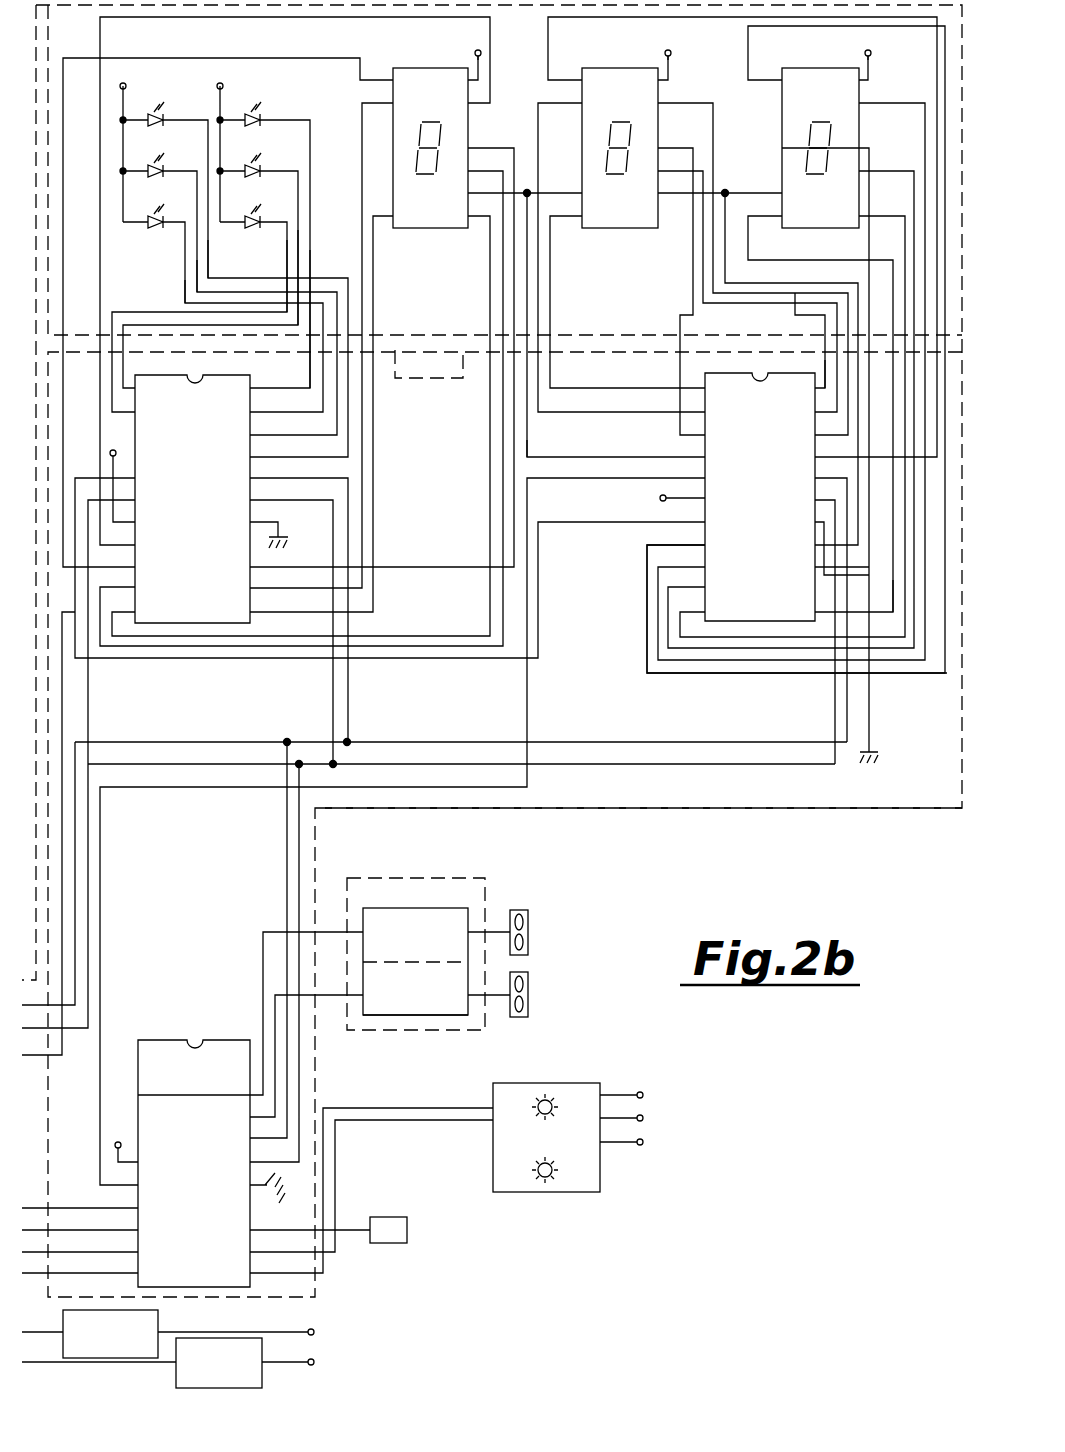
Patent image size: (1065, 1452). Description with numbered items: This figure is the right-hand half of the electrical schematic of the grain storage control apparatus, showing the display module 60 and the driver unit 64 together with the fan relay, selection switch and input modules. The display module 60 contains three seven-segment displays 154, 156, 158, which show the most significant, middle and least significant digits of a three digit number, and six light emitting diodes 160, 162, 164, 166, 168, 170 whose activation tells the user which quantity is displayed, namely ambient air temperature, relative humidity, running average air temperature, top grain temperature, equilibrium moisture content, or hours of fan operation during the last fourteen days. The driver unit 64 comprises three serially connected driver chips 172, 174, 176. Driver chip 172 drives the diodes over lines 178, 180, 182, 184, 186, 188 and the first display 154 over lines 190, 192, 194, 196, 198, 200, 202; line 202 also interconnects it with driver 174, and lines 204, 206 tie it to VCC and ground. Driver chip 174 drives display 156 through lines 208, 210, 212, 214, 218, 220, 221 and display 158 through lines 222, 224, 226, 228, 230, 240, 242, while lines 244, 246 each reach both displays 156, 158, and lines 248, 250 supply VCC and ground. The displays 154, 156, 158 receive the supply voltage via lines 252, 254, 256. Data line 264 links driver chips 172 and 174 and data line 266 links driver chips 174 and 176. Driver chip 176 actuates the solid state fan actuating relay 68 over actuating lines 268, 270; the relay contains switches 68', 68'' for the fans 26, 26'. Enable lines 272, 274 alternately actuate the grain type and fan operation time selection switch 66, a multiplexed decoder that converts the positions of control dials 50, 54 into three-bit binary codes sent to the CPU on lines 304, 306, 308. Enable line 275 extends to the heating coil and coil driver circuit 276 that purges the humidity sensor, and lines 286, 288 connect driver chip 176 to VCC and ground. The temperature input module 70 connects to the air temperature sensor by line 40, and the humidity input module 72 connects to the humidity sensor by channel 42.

The fan 26 is at (521, 928).
The fan 26' is at (526, 994).
The line 40 is at (292, 1332).
The channel 42 is at (295, 1362).
The control dial 50 is at (545, 1095).
The control dial 54 is at (548, 1180).
The display module 60 is at (450, 340).
The driver unit 64 is at (712, 810).
The grain type and desired time of daily fan operation selection switch 66 is at (578, 1083).
The solid state fan actuating relay 68 is at (429, 937).
The switch 68' is at (415, 929).
The switch 68'' is at (415, 1036).
The temperature input module 70 is at (160, 1322).
The humidity input module 72 is at (176, 1374).
The seven-segment display 154 is at (455, 64).
The seven-segment display 156 is at (630, 64).
The seven-segment display 158 is at (830, 64).
The light emitting diode 160 is at (148, 105).
The light emitting diode 162 is at (154, 165).
The light emitting diode 164 is at (154, 214).
The light emitting diode 166 is at (252, 105).
The light emitting diode 168 is at (248, 165).
The light emitting diode 170 is at (250, 214).
The driver chip 172 is at (200, 443).
The driver chip 174 is at (762, 443).
The driver chip 176 is at (182, 1040).
The line 178 is at (208, 240).
The line 180 is at (197, 260).
The line 182 is at (185, 280).
The line 184 is at (287, 118).
The line 186 is at (298, 187).
The line 188 is at (287, 252).
The line 190 is at (362, 97).
The line 192 is at (373, 255).
The line 194 is at (389, 331).
The line 196 is at (663, 333).
The line 198 is at (490, 268).
The line 200 is at (330, 18).
The line 202 is at (228, 58).
The line 204 is at (122, 524).
The line 206 is at (278, 520).
The line 208 is at (680, 428).
The line 210 is at (575, 400).
The line 212 is at (550, 256).
The line 214 is at (703, 270).
The line 218 is at (824, 370).
The line 220 is at (795, 305).
The line 221 is at (937, 92).
The line 222 is at (647, 552).
The line 224 is at (658, 582).
The line 226 is at (668, 610).
The line 228 is at (680, 630).
The line 230 is at (825, 650).
The line 240 is at (869, 660).
The line 242 is at (945, 132).
The line 244 is at (612, 455).
The line 246 is at (748, 280).
The line 248 is at (668, 492).
The line 250 is at (869, 740).
The line 252 is at (481, 58).
The line 254 is at (671, 58).
The line 256 is at (871, 62).
The data line 264 is at (183, 660).
The data line 266 is at (157, 788).
The actuating line 268 is at (263, 945).
The actuating line 270 is at (275, 990).
The enable line 272 is at (438, 1105).
The enable line 274 is at (390, 1122).
The enable line 275 is at (348, 1232).
The heating coil and coil driver circuit 276 is at (388, 1217).
The line 286 is at (114, 1142).
The line 288 is at (275, 1173).
The line 304 is at (632, 1092).
The line 306 is at (645, 1115).
The line 308 is at (632, 1145).